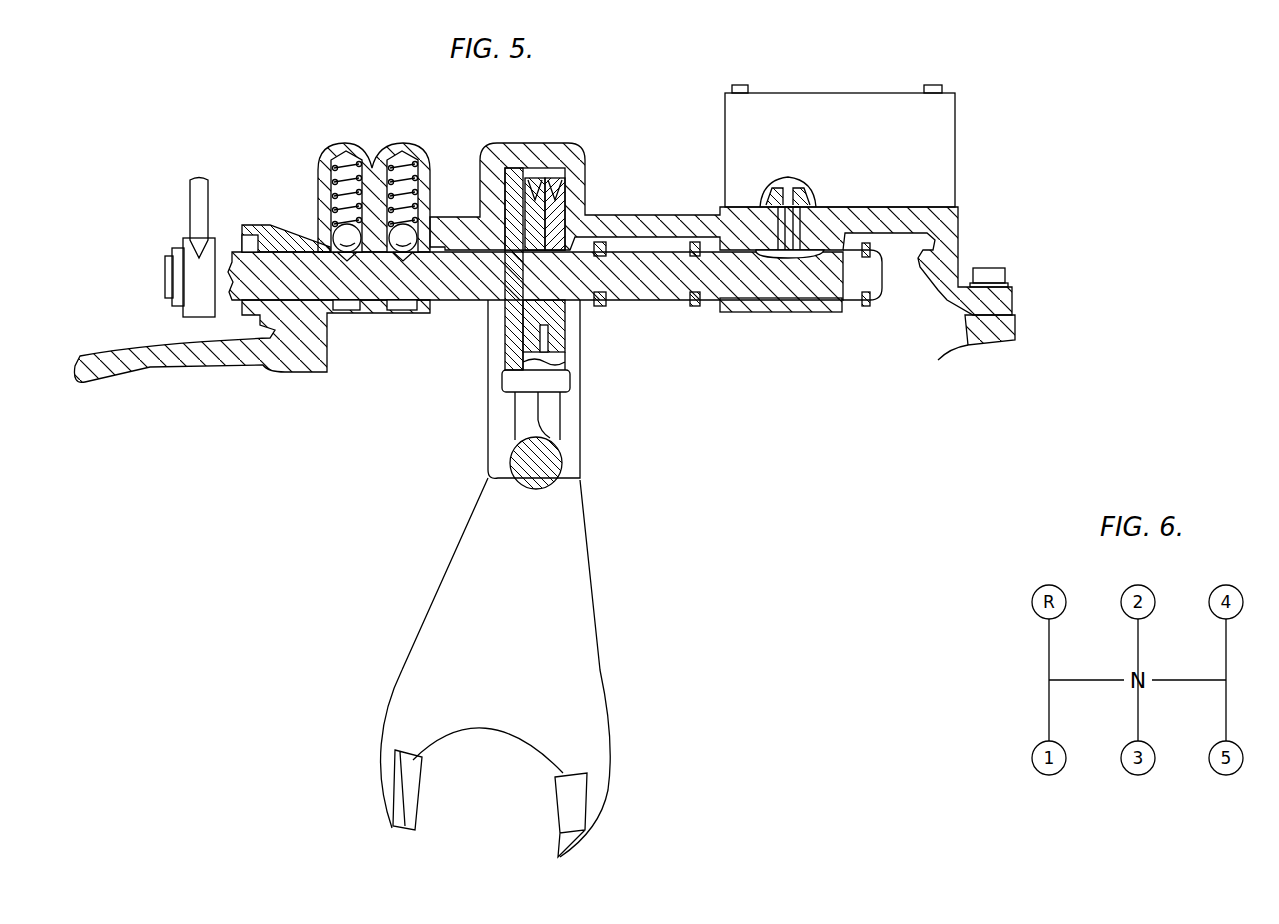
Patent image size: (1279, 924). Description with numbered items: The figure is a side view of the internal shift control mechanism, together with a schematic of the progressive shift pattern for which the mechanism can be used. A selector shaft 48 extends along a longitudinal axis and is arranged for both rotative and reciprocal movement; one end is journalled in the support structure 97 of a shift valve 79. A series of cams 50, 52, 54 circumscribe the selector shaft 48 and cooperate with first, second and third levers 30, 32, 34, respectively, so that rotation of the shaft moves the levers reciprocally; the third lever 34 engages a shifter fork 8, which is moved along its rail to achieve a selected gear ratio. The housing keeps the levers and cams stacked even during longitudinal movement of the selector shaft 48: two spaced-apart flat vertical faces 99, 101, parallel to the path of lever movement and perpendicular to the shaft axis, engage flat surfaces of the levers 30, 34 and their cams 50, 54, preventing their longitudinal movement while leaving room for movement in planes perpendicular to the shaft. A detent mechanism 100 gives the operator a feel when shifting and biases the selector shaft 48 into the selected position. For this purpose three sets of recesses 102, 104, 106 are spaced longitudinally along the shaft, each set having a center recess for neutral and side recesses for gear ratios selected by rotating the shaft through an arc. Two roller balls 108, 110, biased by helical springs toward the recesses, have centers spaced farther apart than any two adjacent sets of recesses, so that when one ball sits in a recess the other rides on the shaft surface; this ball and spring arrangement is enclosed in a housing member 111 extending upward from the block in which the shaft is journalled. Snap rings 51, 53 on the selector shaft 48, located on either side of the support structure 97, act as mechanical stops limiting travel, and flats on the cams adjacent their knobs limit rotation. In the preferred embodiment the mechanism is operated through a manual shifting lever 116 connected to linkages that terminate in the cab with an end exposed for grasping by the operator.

The shifter fork 8 is at (518, 620).
The first lever 30 is at (513, 162).
The second lever 32 is at (535, 180).
The third lever 34 is at (552, 180).
The selector shaft 48 is at (660, 270).
The cam 50 is at (510, 316).
The snap ring 51 is at (695, 302).
The cam 52 is at (560, 232).
The snap ring 53 is at (866, 306).
The cam 54 is at (575, 222).
The shift valve 79 is at (957, 160).
The support structure 97 is at (756, 312).
The vertical face 99 is at (538, 232).
The detent mechanism 100 is at (366, 152).
The vertical face 101 is at (508, 188).
The set of recesses 102 is at (334, 254).
The set of recesses 104 is at (362, 264).
The set of recesses 106 is at (412, 260).
The roller ball 108 is at (340, 236).
The roller ball 110 is at (408, 236).
The housing member 111 is at (340, 145).
The manual shifting lever 116 is at (208, 196).